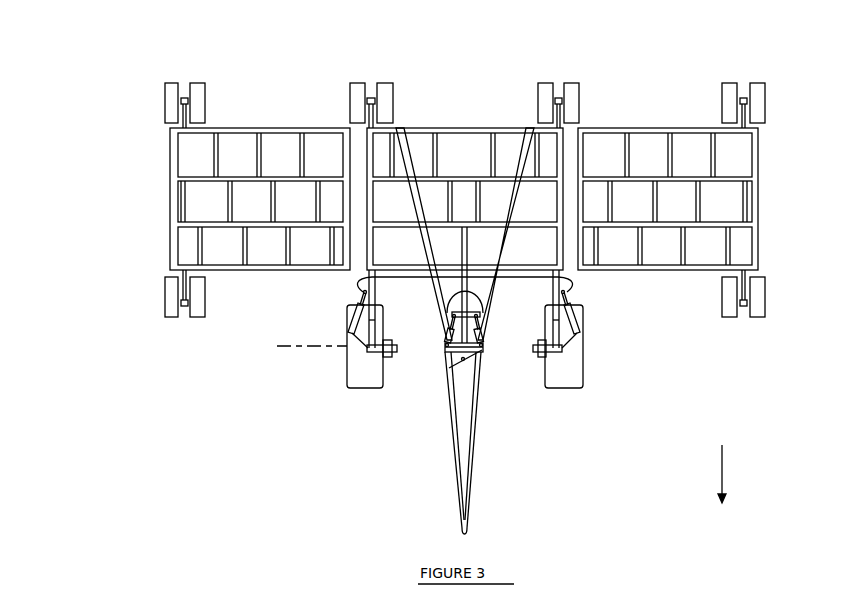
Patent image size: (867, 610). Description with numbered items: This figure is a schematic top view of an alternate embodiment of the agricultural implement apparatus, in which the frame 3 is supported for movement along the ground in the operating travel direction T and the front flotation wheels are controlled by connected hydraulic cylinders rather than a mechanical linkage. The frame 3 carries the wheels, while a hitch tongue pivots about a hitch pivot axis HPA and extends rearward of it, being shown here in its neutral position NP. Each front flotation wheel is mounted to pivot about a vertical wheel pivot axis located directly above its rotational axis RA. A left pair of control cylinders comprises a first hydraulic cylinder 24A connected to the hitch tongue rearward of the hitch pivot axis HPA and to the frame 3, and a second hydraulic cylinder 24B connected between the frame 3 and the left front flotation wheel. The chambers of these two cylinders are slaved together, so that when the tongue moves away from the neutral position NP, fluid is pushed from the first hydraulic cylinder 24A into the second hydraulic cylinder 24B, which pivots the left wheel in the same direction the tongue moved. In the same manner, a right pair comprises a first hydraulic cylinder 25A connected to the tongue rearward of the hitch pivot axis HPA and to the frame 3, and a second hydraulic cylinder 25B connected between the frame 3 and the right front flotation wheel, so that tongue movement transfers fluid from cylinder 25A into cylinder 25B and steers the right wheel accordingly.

The frame 3 is at (603, 127).
The hitch pivot axis HPA is at (444, 440).
The first hydraulic cylinder 24A is at (448, 334).
The first hydraulic cylinder 25A is at (482, 334).
The neutral position NP is at (458, 502).
The rotational axis RA is at (303, 348).
The second hydraulic cylinder 25B is at (362, 294).
The second hydraulic cylinder 24B is at (577, 302).
The operating travel direction T is at (722, 465).